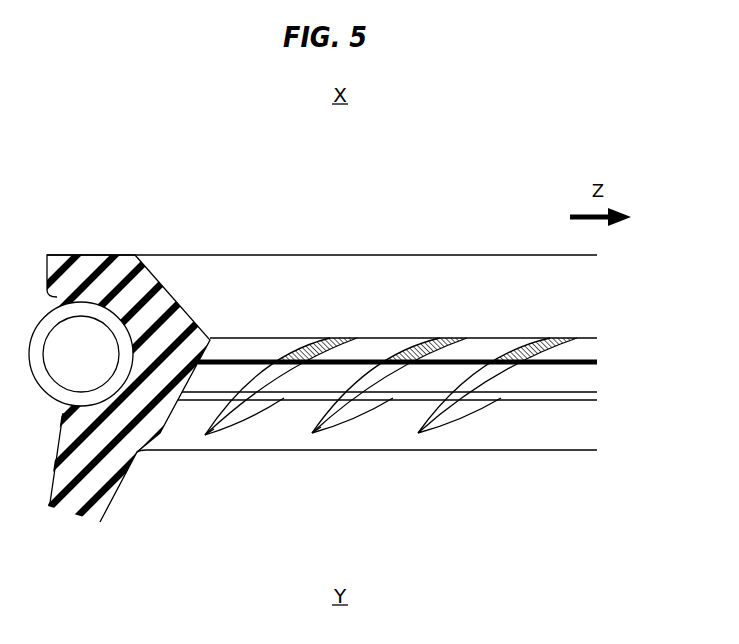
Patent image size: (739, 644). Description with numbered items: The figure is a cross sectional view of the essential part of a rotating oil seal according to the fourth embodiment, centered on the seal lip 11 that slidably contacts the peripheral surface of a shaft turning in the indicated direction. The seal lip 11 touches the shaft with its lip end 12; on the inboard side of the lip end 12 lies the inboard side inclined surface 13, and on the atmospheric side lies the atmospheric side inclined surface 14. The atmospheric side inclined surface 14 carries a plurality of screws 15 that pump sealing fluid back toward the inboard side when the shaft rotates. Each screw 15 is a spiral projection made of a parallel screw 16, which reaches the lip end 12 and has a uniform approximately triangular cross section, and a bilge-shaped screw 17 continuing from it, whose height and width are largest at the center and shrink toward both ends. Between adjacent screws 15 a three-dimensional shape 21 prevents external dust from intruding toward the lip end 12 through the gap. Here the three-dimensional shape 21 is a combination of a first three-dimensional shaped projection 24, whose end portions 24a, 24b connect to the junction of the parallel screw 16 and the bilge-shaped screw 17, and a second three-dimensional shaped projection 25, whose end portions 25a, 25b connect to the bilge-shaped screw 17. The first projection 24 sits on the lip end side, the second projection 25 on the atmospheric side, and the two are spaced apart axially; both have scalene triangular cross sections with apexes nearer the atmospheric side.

The seal lip 11 is at (116, 272).
The lip end 12 is at (211, 339).
The inboard side inclined surface 13 is at (183, 306).
The atmospheric side inclined surface 14 is at (172, 418).
The screw 15 is at (267, 407).
The parallel screw 16 is at (445, 352).
The bilge-shaped screw 17 is at (333, 407).
The three-dimensional shape 21 is at (378, 350).
The first three-dimensional shaped projection 24 is at (396, 350).
The end portion of first three-dimensional shaped projection 24a is at (421, 352).
The end portion of first three-dimensional shaped projection 24b is at (325, 350).
The second three-dimensional shaped projection 25 is at (303, 407).
The end portion of second three-dimensional shaped projection 25a is at (370, 407).
The end portion of second three-dimensional shaped projection 25b is at (277, 407).